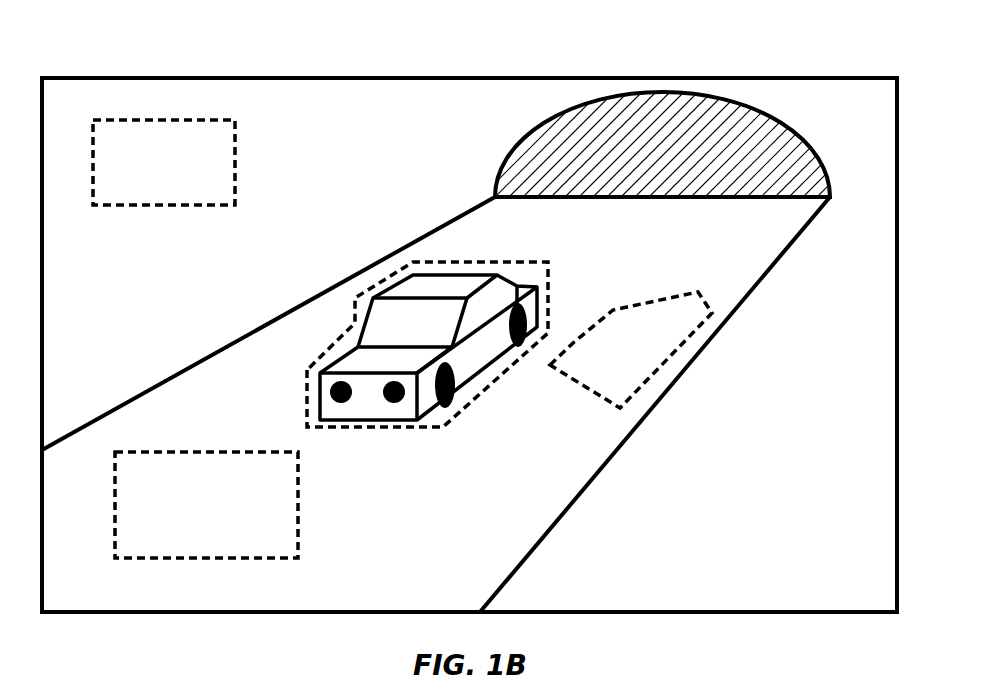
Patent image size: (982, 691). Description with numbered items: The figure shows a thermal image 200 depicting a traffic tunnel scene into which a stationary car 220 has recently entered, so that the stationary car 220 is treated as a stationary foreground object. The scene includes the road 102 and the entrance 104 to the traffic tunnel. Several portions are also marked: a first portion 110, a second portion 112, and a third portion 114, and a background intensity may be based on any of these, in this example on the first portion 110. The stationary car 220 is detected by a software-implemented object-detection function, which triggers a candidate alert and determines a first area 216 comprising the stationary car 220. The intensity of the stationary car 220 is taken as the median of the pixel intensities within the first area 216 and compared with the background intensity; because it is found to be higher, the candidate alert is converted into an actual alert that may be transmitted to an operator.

The thermal image 200 is at (97, 62).
The road 102 is at (500, 557).
The entrance 104 is at (537, 148).
The first portion 110 is at (200, 170).
The second portion 112 is at (255, 522).
The third portion 114 is at (615, 363).
The first area 216 is at (527, 275).
The stationary car 220 is at (390, 318).